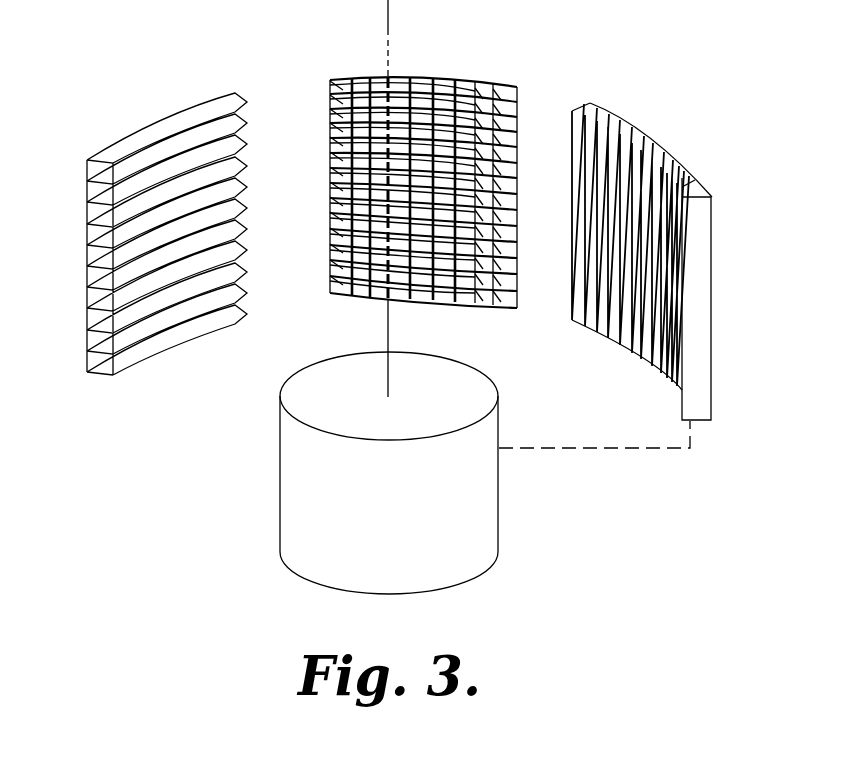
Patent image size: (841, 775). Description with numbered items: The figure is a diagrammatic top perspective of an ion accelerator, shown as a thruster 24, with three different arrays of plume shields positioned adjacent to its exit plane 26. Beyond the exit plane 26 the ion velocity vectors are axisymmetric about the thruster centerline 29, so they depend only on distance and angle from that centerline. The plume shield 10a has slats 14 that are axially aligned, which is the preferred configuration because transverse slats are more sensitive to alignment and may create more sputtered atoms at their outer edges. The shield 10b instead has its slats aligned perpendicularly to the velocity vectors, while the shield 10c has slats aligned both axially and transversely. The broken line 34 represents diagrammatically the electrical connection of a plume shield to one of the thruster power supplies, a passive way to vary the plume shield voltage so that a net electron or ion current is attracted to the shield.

The plume shield 10a is at (690, 144).
The plume shield 10b is at (96, 146).
The plume shield 10c is at (478, 77).
The slats 14 is at (113, 376).
The thruster 24 is at (483, 527).
The exit plane 26 is at (460, 383).
The thruster centerline 29 is at (388, 12).
The broken line 34 is at (637, 452).